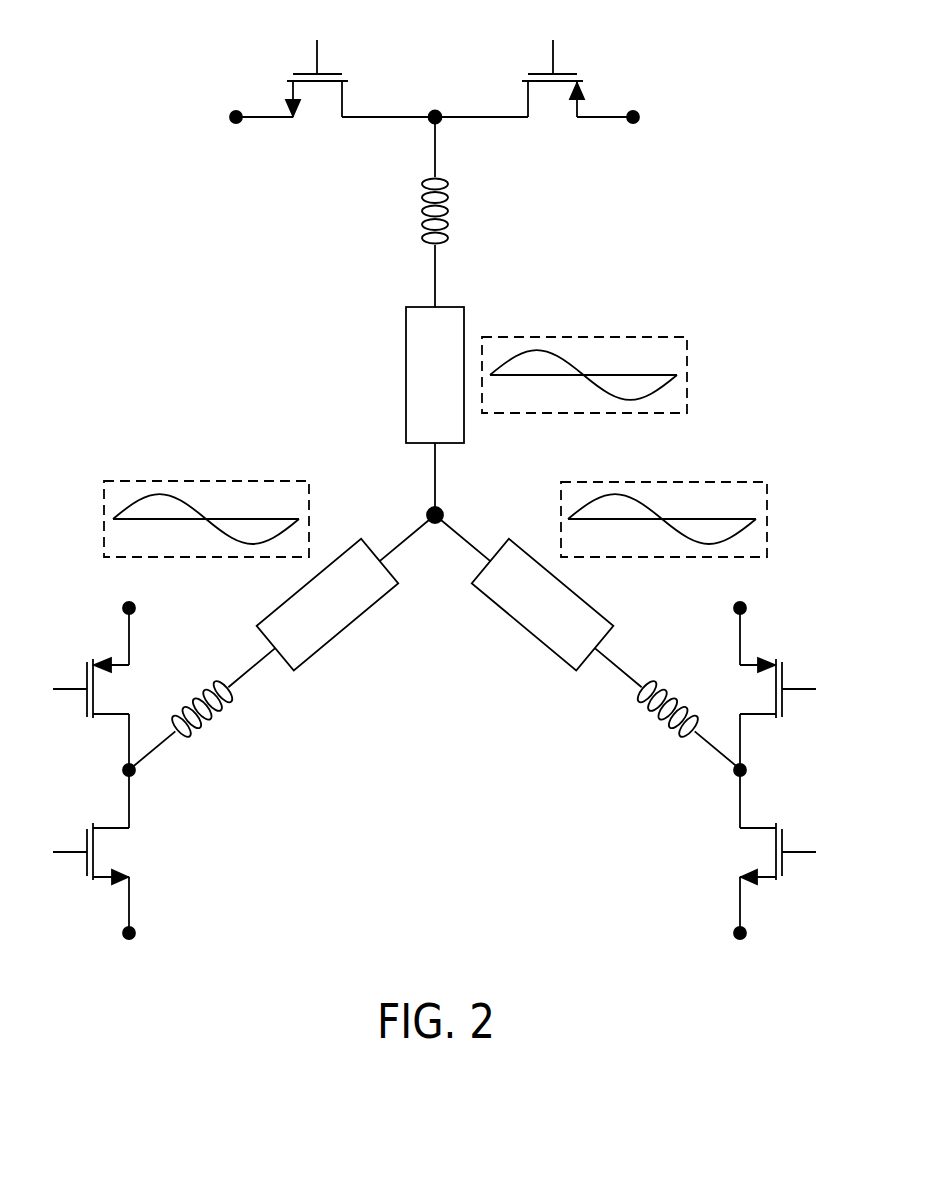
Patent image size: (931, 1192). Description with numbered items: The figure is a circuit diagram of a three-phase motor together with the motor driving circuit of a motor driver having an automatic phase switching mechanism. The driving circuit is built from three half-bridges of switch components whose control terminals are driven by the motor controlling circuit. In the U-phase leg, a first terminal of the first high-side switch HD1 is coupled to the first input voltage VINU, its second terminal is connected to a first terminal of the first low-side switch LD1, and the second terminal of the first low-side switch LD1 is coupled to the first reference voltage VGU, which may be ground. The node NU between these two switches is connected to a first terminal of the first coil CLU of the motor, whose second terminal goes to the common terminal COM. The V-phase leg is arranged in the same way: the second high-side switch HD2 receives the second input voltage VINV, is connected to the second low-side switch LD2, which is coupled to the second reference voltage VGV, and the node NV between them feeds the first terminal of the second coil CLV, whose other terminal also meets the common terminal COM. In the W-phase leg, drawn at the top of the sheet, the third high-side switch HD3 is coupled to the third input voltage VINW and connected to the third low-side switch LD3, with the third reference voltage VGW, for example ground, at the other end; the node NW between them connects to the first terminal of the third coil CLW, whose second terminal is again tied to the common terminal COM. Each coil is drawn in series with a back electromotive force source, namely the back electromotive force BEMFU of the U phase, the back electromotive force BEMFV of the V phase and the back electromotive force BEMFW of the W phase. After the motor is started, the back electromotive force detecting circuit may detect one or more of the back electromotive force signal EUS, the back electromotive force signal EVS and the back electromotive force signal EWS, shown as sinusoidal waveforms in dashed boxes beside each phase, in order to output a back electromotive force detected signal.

The third low-side switch LD3 is at (295, 73).
The third high-side switch HD3 is at (575, 73).
The third reference voltage VGW is at (226, 117).
The third input voltage VINW is at (647, 117).
The node NW is at (435, 132).
The third coil CLW is at (422, 207).
The back electromotive force of W phase BEMFW is at (435, 411).
The back electromotive force signal of W phase EWS is at (596, 336).
The back electromotive force signal of U phase EUS is at (195, 480).
The back electromotive force signal of V phase EVS is at (743, 480).
The common terminal COM is at (400, 508).
The back electromotive force of U phase BEMFU is at (332, 601).
The back electromotive force of V phase BEMFV is at (538, 601).
The first coil CLU is at (206, 718).
The second coil CLV is at (663, 718).
The first input voltage VINU is at (127, 618).
The first high-side switch HD1 is at (86, 676).
The node NU is at (107, 771).
The first low-side switch LD1 is at (86, 866).
The first reference voltage VGU is at (128, 924).
The second input voltage VINV is at (738, 618).
The second high-side switch HD2 is at (783, 676).
The node NV is at (761, 771).
The second low-side switch LD2 is at (783, 866).
The second reference voltage VGV is at (740, 924).